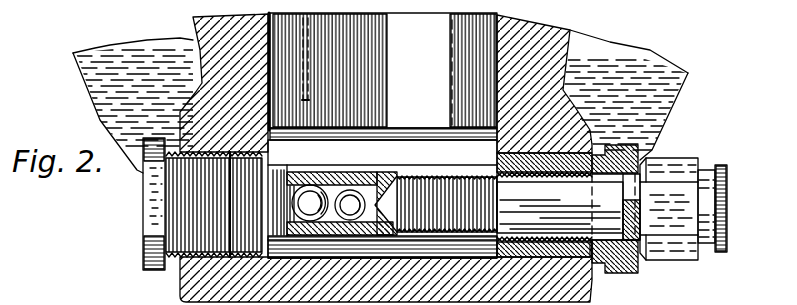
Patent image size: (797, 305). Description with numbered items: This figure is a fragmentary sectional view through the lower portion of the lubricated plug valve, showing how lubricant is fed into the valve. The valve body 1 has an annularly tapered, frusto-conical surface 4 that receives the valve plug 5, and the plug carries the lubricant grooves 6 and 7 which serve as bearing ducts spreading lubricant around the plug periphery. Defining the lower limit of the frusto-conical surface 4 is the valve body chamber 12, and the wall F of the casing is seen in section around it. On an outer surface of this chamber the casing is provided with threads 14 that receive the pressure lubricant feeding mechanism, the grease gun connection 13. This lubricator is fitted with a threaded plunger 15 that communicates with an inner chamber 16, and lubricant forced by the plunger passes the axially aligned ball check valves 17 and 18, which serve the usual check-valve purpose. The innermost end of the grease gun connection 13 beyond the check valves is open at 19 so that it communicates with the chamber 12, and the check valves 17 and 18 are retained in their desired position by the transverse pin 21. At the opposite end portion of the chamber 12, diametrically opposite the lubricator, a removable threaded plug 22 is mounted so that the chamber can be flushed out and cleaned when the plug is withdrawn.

The valve body 1 is at (574, 89).
The frusto-conical surface 4 is at (224, 83).
The valve plug 5 is at (420, 146).
The lubricant groove 6 is at (310, 73).
The lubricant groove 7 is at (450, 93).
The valve body chamber 12 is at (327, 253).
The grease gun connection 13 is at (658, 268).
The threads 14 is at (600, 133).
The threaded plunger 15 is at (590, 243).
The inner chamber 16 is at (372, 222).
The ball check valve 17 is at (341, 188).
The ball check valve 18 is at (305, 185).
The open end 19 is at (295, 222).
The transverse pin 21 is at (281, 178).
The removable threaded plug 22 is at (143, 247).
The wall F is at (672, 100).